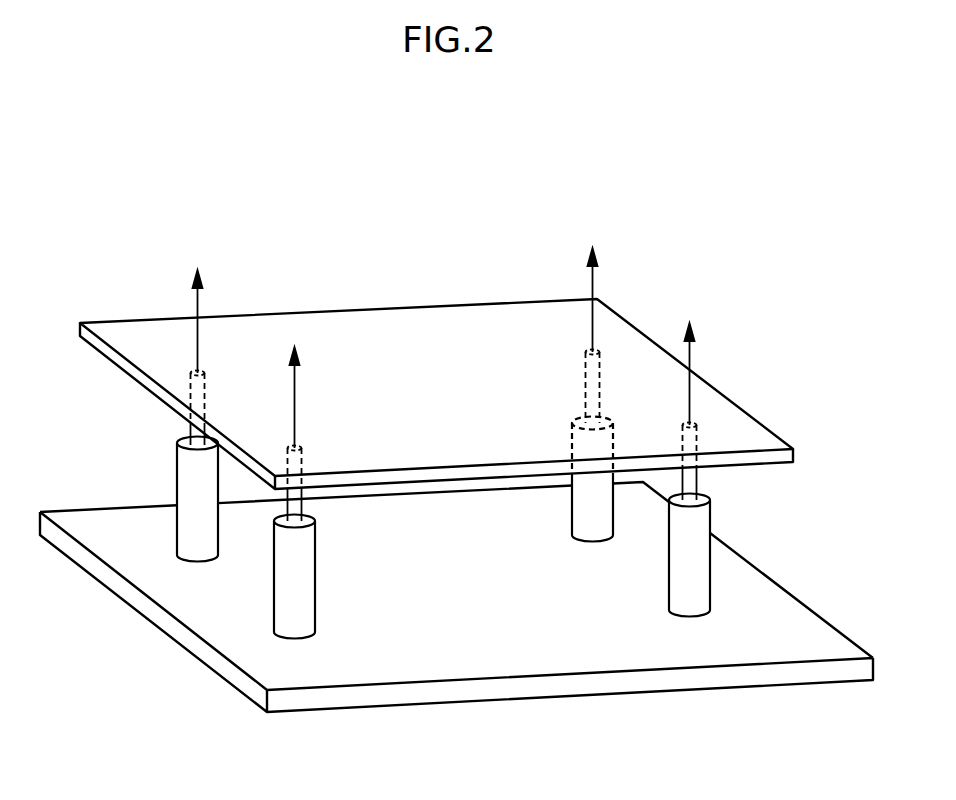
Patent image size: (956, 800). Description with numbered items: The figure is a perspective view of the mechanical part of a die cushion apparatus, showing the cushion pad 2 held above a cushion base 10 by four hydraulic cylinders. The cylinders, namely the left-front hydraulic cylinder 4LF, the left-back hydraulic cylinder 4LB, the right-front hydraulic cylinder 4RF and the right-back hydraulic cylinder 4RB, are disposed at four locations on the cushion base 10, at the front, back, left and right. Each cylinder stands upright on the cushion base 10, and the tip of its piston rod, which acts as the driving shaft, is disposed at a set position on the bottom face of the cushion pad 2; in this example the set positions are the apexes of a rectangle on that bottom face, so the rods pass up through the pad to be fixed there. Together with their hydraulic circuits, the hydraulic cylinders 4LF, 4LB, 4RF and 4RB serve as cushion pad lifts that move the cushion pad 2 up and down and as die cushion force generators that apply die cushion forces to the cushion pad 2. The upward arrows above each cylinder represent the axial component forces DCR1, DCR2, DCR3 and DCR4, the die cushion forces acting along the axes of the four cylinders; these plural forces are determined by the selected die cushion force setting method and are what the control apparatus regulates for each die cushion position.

The cushion pad 2 is at (748, 410).
The cushion base 10 is at (802, 600).
The hydraulic cylinder 4LB is at (183, 472).
The hydraulic cylinder 4LF is at (279, 595).
The hydraulic cylinder 4RB is at (577, 515).
The hydraulic cylinder 4RF is at (673, 580).
The axial component force DCR1 is at (294, 384).
The axial component force DCR2 is at (198, 309).
The axial component force DCR3 is at (593, 287).
The axial component force DCR4 is at (689, 361).